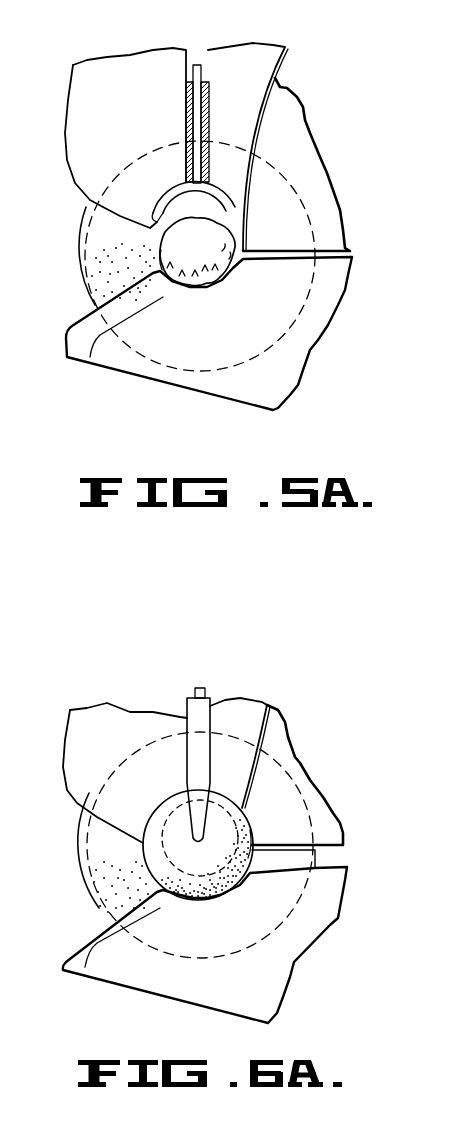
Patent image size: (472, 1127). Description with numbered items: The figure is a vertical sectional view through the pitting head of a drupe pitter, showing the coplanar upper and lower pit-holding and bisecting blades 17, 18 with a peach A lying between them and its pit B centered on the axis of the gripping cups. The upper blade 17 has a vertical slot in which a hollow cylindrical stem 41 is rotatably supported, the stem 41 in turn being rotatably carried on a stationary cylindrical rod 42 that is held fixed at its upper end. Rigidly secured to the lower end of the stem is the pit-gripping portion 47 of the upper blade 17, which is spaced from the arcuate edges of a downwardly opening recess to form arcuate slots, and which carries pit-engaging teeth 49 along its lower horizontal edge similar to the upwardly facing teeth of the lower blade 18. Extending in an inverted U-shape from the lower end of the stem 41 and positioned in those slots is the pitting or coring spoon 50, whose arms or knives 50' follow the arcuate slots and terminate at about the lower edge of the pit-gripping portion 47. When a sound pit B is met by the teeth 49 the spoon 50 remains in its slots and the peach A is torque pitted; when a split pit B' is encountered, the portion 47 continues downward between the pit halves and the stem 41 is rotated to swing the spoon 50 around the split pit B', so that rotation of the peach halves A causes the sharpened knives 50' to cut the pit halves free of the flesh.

In FIG. 5A, the upper pit-holding and drupe-bisecting blade 17 is at (76, 84).
In FIG. 6A, the upper pit-holding and drupe-bisecting blade 17 is at (87, 710).
In FIG. 5A, the lower pit-holding and peach bisecting blade 18 is at (128, 367).
In FIG. 6A, the lower pit-holding and peach bisecting blade 18 is at (118, 978).
In FIG. 5A, the cylindrical stem 41 is at (186, 108).
In FIG. 6A, the cylindrical stem 41 is at (186, 725).
In FIG. 5A, the stationary cylindrical rod 42 is at (197, 64).
In FIG. 6A, the stationary cylindrical rod 42 is at (200, 688).
In FIG. 5A, the pit-gripping portion 47 is at (220, 206).
In FIG. 6A, the pit-gripping portion 47 is at (178, 827).
In FIG. 5A, the pit-engaging and gripping teeth 49 is at (232, 223).
In FIG. 5A, the pitting or coring spoon 50 is at (182, 191).
In FIG. 6A, the arms or knives of spoon 50' is at (202, 809).
In FIG. 5A, the peach A is at (86, 277).
In FIG. 6A, the peach A is at (92, 855).
In FIG. 5A, the pit B is at (132, 242).
In FIG. 6A, the split pit B' is at (268, 829).